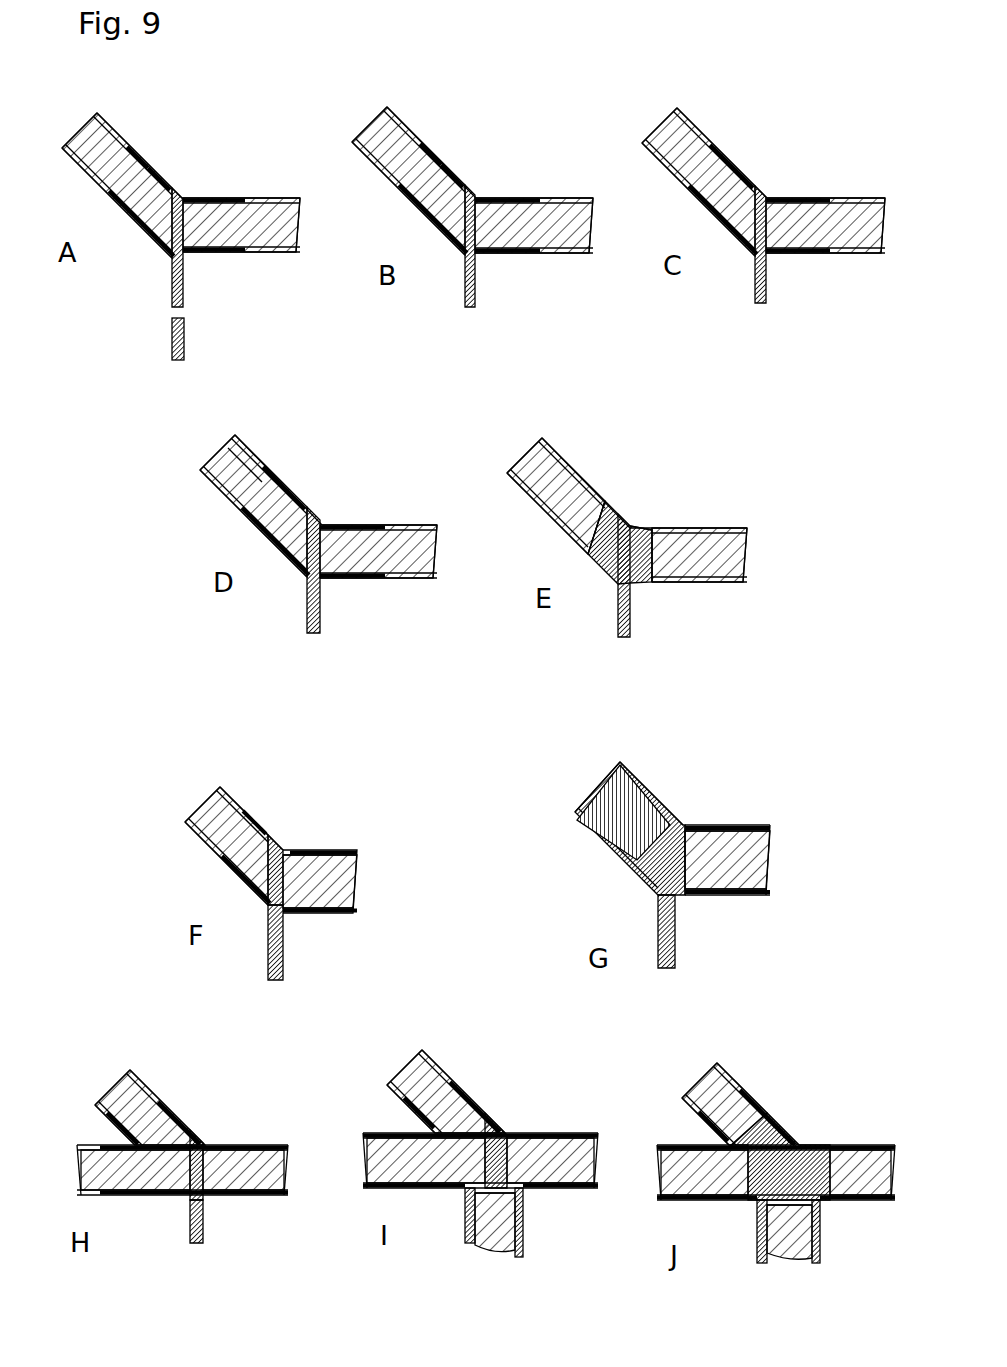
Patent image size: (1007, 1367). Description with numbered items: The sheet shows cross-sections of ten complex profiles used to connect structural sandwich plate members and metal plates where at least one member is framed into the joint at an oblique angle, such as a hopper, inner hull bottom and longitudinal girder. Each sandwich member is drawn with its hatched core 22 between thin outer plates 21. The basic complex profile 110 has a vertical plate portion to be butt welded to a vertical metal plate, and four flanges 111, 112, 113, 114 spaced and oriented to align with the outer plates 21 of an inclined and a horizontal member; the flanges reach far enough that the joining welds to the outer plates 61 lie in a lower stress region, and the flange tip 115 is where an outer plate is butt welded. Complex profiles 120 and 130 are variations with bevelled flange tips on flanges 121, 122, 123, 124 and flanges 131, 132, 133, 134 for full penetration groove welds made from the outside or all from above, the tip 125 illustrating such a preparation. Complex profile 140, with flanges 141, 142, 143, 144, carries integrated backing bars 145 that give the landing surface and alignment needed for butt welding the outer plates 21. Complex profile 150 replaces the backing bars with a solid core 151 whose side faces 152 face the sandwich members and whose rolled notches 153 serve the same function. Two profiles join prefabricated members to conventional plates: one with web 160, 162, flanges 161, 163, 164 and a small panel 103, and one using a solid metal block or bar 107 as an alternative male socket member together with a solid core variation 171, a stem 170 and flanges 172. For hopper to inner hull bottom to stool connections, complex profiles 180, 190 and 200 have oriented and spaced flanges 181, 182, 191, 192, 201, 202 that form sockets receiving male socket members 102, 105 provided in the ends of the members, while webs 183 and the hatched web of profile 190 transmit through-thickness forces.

In FIG. 9A, the outer plates 21 is at (133, 139).
In FIG. 9E, the outer plates 21 is at (565, 462).
In FIG. 9F, the outer plates 21 is at (232, 798).
In FIG. 9A, the core panel 22 is at (149, 199).
In FIG. 9B, the core panel 22 is at (451, 199).
In FIG. 9C, the core panel 22 is at (726, 189).
In FIG. 9D, the core panel 22 is at (296, 529).
In FIG. 9E, the core panel 22 is at (574, 496).
In FIG. 9F, the core panel 22 is at (238, 849).
In FIG. 9G, the core panel 22 is at (736, 874).
In FIG. 9H, the core panel 22 is at (154, 1186).
In FIG. 9I, the core panel 22 is at (443, 1112).
In FIG. 9J, the core panel 22 is at (738, 1125).
In FIG. 9A, the outer plates 61 is at (184, 324).
In FIG. 9G, the male socket member 102 is at (760, 825).
In FIG. 9H, the male socket member 102 is at (77, 1150).
In FIG. 9I, the male socket member 102 is at (462, 1090).
In FIG. 9F, the panel 103 is at (348, 851).
In FIG. 9F, the male socket member 105 is at (243, 806).
In FIG. 9H, the male socket member 105 is at (143, 1081).
In FIG. 9G, the solid metal block or bar 107 is at (645, 800).
In FIG. 9A, the complex profile 110 is at (171, 256).
In FIG. 9A, the flange 111 is at (142, 228).
In FIG. 9A, the flange 112 is at (162, 180).
In FIG. 9A, the flange 113 is at (205, 198).
In FIG. 9A, the flange 114 is at (198, 253).
In FIG. 9A, the outer flange extension 115 is at (128, 145).
In FIG. 9B, the complex profile 120 is at (477, 278).
In FIG. 9B, the flange 121 is at (432, 228).
In FIG. 9B, the flange 122 is at (442, 163).
In FIG. 9B, the flange 123 is at (498, 198).
In FIG. 9B, the flange 124 is at (508, 254).
In FIG. 9B, the outer flange extension 125 is at (403, 124).
In FIG. 9C, the complex profile 130 is at (766, 281).
In FIG. 9C, the flange 131 is at (716, 219).
In FIG. 9C, the flange 132 is at (735, 166).
In FIG. 9C, the flange 133 is at (797, 198).
In FIG. 9C, the flange 134 is at (828, 253).
In FIG. 9D, the complex profile 140 is at (322, 608).
In FIG. 9D, the inner flange 141 is at (262, 535).
In FIG. 9D, the outer flange 142 is at (292, 492).
In FIG. 9D, the upper flange 143 is at (337, 525).
In FIG. 9D, the lower flange 144 is at (328, 580).
In FIG. 9D, the backing bars 145 is at (257, 460).
In FIG. 9E, the complex profile 150 is at (630, 597).
In FIG. 9E, the solid core 151 is at (634, 527).
In FIG. 9E, the side faces 152 is at (690, 553).
In FIG. 9E, the rolled notches 153 is at (627, 522).
In FIG. 9F, the stem 160 is at (284, 953).
In FIG. 9F, the inner flange 161 is at (225, 872).
In FIG. 9F, the web 162 is at (270, 838).
In FIG. 9F, the upper flange 163 is at (286, 851).
In FIG. 9F, the lower flange 164 is at (287, 913).
In FIG. 9G, the stem 170 is at (676, 953).
In FIG. 9G, the solid core variation 171 is at (683, 825).
In FIG. 9G, the flange 172 is at (614, 853).
In FIG. 9H, the complex profile 180 is at (190, 1199).
In FIG. 9H, the flange 181 is at (125, 1196).
In FIG. 9H, the flange 182 is at (178, 1118).
In FIG. 9H, the web 183 is at (204, 1214).
In FIG. 9I, the complex profile 190 is at (507, 1133).
In FIG. 9I, the flange 191 is at (440, 1190).
In FIG. 9I, the flange 192 is at (487, 1112).
In FIG. 9J, the complex profile 200 is at (800, 1175).
In FIG. 9J, the flange 201 is at (728, 1201).
In FIG. 9J, the flange 202 is at (768, 1112).